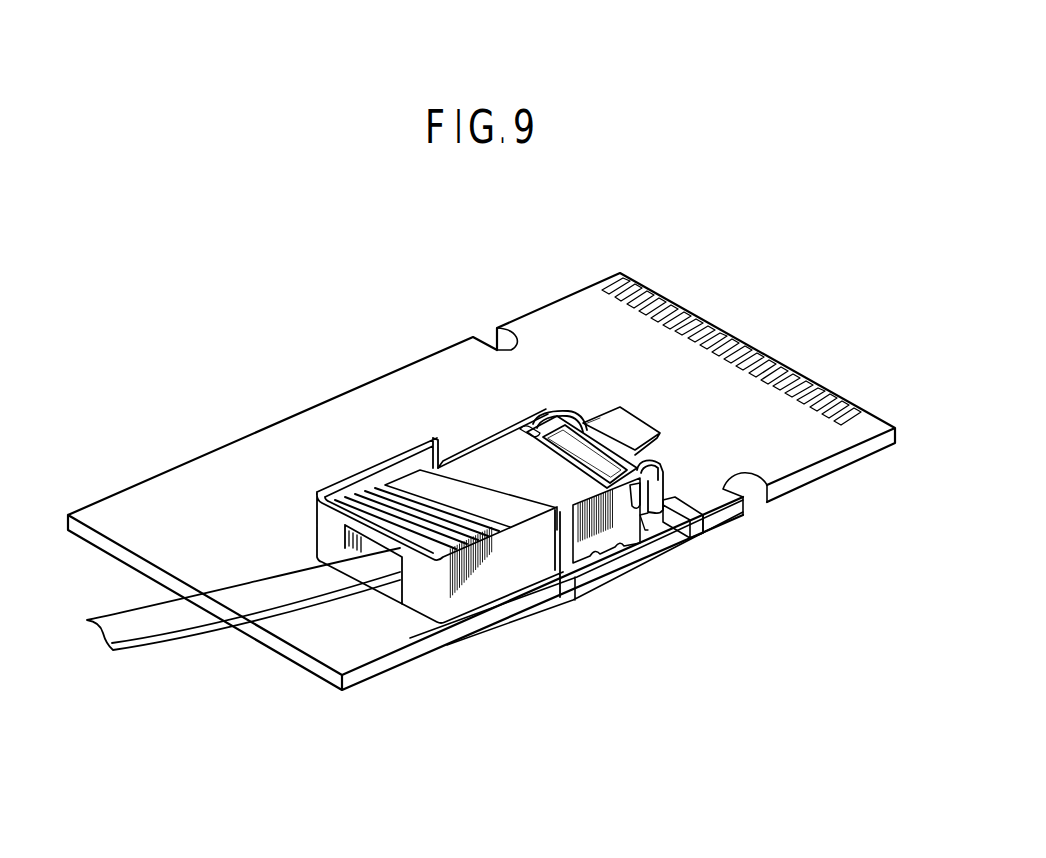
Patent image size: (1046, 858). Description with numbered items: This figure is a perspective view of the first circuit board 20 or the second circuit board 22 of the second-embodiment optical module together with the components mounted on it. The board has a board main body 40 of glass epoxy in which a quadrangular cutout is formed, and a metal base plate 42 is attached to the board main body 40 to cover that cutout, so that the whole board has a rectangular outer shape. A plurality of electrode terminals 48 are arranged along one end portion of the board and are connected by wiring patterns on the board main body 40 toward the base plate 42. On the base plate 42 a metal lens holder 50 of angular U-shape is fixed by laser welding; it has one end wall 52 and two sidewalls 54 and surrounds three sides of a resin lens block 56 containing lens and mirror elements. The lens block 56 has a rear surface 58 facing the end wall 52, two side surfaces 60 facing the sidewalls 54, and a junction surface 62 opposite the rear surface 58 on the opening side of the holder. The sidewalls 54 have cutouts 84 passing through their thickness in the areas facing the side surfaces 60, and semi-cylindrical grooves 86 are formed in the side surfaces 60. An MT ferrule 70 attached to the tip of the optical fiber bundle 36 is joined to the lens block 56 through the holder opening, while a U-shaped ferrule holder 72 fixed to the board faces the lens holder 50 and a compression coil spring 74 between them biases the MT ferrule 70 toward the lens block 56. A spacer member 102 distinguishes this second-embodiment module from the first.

The first circuit board 20 is at (490, 481).
The second circuit board 22 is at (490, 481).
The optical fiber bundle 36 is at (247, 622).
The board main body 40 is at (797, 452).
The base plate 42 is at (613, 573).
The electrode terminals 48 is at (760, 343).
The lens holder 50 is at (618, 405).
The end wall 52 is at (635, 445).
The sidewall 54 is at (472, 477).
The lens block 56 is at (652, 470).
The rear surface 58 is at (587, 420).
The side surface 60 is at (553, 415).
The junction surface 62 is at (525, 430).
The MT ferrule 70 is at (435, 475).
The ferrule holder 72 is at (400, 450).
The compression coil spring 74 is at (370, 497).
The cutout 84 is at (740, 518).
The groove 86 is at (642, 522).
The spacer member 102 is at (636, 404).